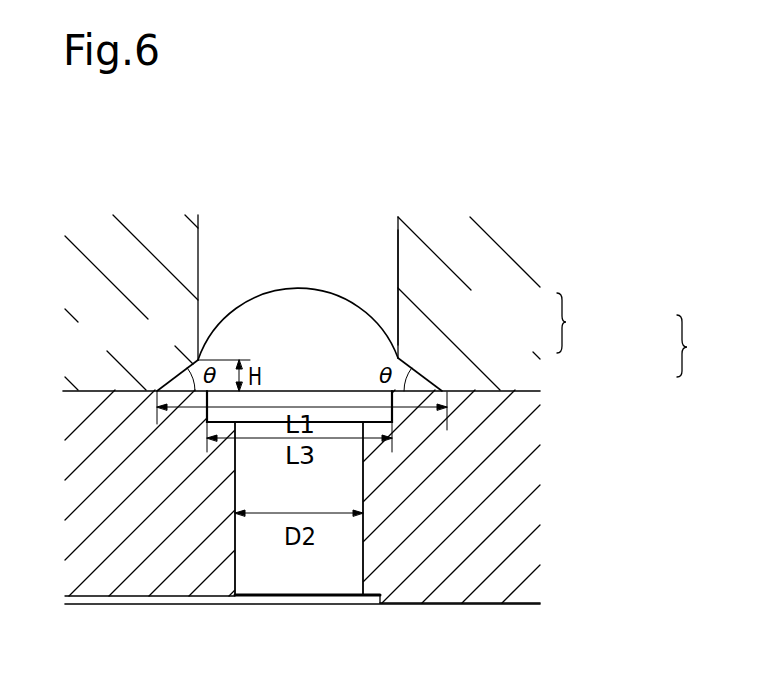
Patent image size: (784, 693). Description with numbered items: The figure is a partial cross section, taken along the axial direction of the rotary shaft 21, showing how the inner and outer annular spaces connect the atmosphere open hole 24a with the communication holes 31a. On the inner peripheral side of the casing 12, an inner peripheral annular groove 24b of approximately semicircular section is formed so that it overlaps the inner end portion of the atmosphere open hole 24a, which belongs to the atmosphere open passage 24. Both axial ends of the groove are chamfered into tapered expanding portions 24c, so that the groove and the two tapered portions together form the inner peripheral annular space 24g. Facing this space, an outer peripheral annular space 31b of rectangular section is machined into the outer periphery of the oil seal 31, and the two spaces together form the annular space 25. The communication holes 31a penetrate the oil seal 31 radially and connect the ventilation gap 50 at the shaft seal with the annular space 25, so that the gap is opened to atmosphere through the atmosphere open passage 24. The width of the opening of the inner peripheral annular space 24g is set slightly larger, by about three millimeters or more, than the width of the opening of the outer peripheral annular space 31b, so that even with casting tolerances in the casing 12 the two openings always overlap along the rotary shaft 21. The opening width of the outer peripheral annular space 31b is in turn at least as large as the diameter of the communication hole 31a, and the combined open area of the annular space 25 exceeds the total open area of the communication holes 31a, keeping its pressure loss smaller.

The casing 12 is at (82, 267).
The atmosphere open passage 24 is at (400, 221).
The atmosphere open hole 24a is at (382, 248).
The inner peripheral annular groove 24b is at (363, 324).
The tapered expanding portion 24c is at (167, 387).
The inner peripheral annular space 24g is at (614, 323).
The annular space 25 is at (724, 346).
The oil seal 31 is at (512, 452).
The communication hole 31a is at (350, 552).
The outer peripheral annular space 31b is at (392, 421).
The rotary shaft 21 is at (217, 617).
The ventilation gap 50 is at (267, 598).